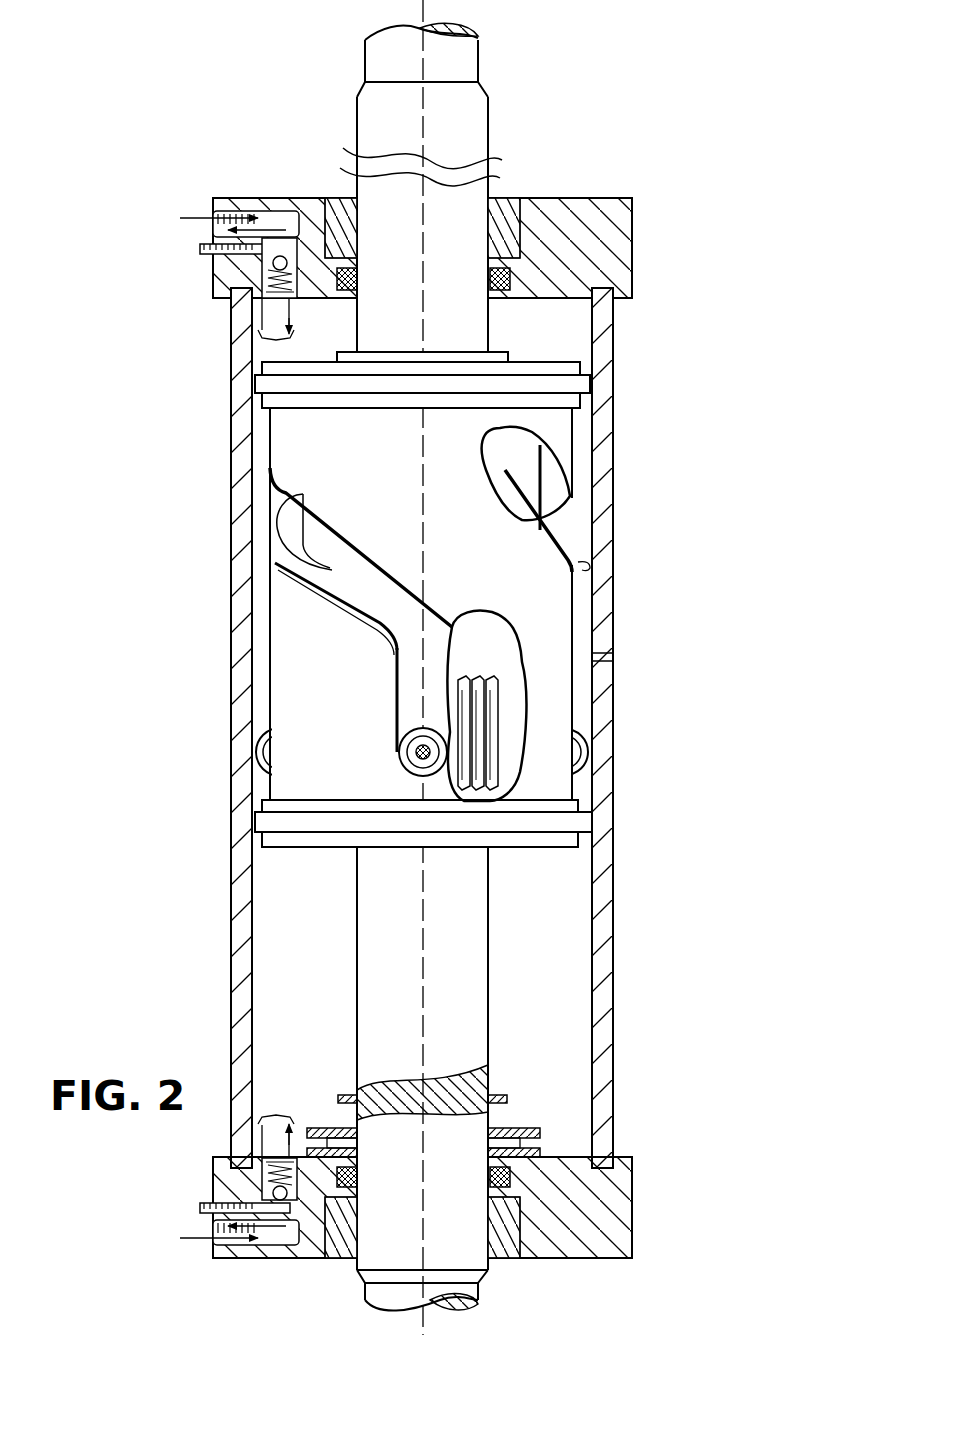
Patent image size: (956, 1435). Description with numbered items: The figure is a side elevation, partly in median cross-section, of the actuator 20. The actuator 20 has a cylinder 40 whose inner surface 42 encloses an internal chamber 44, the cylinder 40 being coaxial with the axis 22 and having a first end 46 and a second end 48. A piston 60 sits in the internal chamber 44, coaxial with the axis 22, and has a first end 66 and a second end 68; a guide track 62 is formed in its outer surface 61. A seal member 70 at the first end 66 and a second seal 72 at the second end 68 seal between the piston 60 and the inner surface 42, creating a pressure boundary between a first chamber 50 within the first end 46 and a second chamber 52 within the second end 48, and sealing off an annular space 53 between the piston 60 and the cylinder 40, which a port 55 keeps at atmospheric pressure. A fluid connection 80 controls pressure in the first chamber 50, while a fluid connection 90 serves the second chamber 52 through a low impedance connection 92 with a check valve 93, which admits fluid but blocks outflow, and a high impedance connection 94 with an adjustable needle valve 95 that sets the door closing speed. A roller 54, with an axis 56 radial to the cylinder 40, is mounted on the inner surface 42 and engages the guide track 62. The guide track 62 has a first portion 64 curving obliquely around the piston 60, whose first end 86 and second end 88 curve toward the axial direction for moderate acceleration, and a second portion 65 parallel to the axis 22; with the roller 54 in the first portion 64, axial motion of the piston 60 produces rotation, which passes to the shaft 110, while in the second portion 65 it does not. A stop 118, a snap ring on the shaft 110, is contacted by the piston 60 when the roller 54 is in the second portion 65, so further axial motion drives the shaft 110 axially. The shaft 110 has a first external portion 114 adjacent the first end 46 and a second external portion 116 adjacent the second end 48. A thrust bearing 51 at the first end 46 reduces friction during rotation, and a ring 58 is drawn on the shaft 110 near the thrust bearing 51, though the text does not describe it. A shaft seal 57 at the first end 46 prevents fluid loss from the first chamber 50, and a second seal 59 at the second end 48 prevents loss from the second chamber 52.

The actuator 20 is at (148, 352).
The axis 22 is at (420, 932).
The cylinder 40 is at (612, 882).
The inner surface 42 is at (582, 568).
The internal chamber 44 is at (582, 345).
The first end 46 is at (632, 1226).
The second end 48 is at (632, 215).
The first chamber 50 is at (530, 992).
The thrust bearing 51 is at (542, 1135).
The second chamber 52 is at (530, 332).
The annular space 53 is at (606, 637).
The roller 54 is at (256, 753).
The port 55 is at (600, 657).
The axis 56 is at (420, 758).
The shaft seal 57 is at (508, 1180).
The snap ring 58 is at (508, 1100).
The second seal 59 is at (507, 278).
The piston 60 is at (286, 441).
The outer surface 61 is at (266, 471).
The guide track 62 is at (518, 481).
The first portion 64 is at (520, 502).
The second portion 65 is at (394, 708).
The first end 66 is at (284, 841).
The second end 68 is at (321, 360).
The seal member 70 is at (580, 823).
The second seal 72 is at (262, 386).
The fluid connection 80 is at (275, 1141).
The first end 86 is at (516, 441).
The second end 88 is at (404, 664).
The fluid connection 90 is at (276, 332).
The low impedance connection 92 is at (213, 212).
The check valve 93 is at (287, 262).
The high impedance connection 94 is at (200, 250).
The needle valve 95 is at (262, 292).
The shaft 110 is at (400, 257).
The first external portion 114 is at (385, 1291).
The second external portion 116 is at (478, 118).
The stop 118 is at (500, 360).